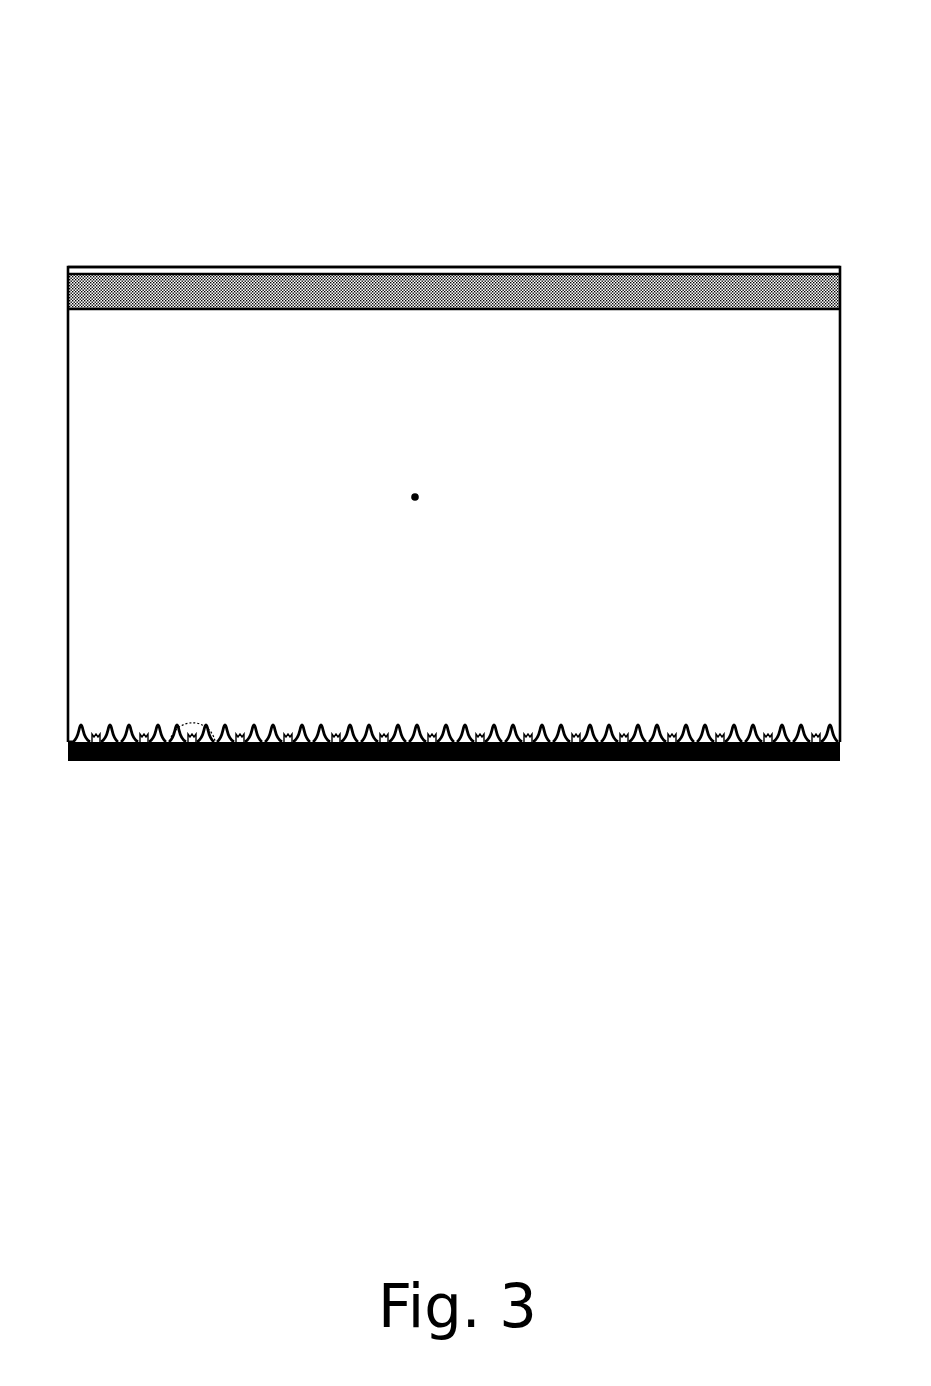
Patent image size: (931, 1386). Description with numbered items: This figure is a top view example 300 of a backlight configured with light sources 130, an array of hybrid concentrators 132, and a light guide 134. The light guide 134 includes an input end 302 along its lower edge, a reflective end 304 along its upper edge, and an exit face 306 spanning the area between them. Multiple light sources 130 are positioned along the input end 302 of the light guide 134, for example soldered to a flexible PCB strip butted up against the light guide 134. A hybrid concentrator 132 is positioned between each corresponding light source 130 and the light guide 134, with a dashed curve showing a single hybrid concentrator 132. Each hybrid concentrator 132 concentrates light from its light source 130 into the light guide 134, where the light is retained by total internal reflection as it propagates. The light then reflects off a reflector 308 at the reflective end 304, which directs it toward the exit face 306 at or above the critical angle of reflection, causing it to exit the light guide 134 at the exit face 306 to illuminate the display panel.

The top view example 300 is at (117, 66).
The reflective end 304 is at (474, 248).
The light guide 134 is at (652, 266).
The reflector 308 is at (455, 310).
The exit face 306 is at (415, 496).
The input end 302 is at (456, 682).
The hybrid concentrator 132 is at (192, 716).
The light source 130 is at (428, 762).